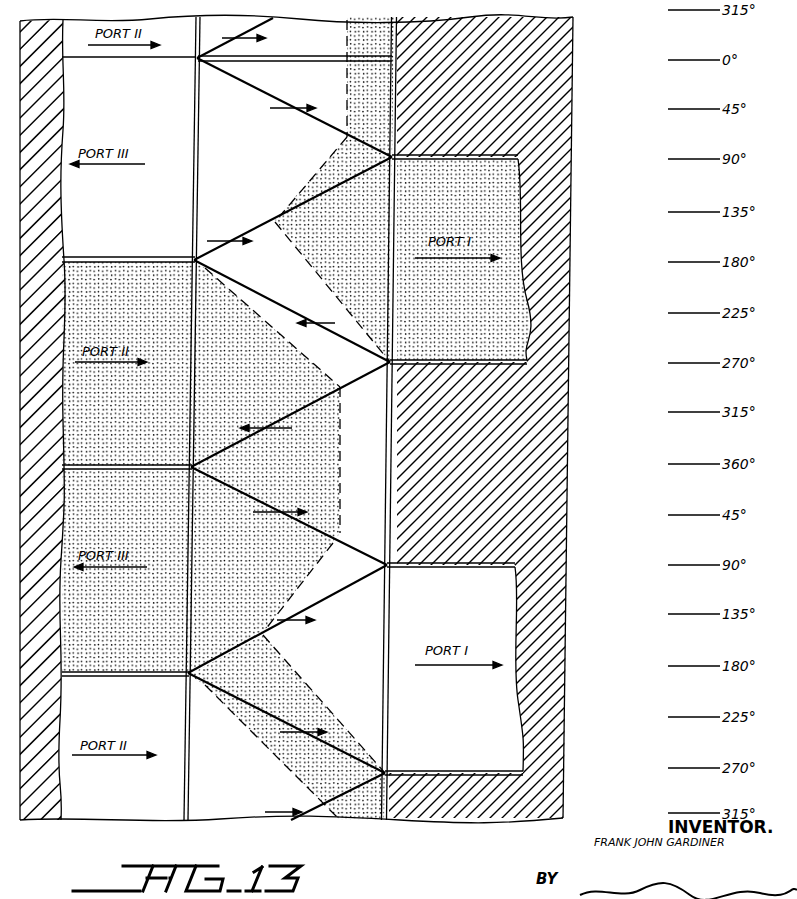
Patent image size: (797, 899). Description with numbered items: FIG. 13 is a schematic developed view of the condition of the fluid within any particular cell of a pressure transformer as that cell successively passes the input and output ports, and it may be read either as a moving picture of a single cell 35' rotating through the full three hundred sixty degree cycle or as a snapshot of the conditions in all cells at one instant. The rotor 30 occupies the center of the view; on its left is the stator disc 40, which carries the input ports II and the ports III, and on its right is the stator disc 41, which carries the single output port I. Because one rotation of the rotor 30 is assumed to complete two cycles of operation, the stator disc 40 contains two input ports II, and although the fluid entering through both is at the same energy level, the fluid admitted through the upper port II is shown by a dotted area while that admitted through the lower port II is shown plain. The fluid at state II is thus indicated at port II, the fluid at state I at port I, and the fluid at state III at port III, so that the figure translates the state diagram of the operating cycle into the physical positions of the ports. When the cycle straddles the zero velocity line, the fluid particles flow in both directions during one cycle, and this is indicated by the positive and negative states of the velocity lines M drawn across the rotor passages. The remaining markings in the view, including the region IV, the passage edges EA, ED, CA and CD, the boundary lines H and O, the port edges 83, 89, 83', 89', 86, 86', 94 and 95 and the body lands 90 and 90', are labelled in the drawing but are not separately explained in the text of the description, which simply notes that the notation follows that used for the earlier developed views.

The stator disc 40 is at (42, 24).
The rotor 30 is at (221, 38).
The cell 35' is at (362, 78).
The stator disc 41 is at (566, 72).
The valve body land 90 is at (398, 415).
The valve body land 90' is at (398, 415).
The port I opening 83 is at (461, 257).
The port I lower edge 89 is at (458, 352).
The port I opening 83' is at (455, 667).
The port I lower edge 89' is at (454, 761).
The port II upper edge 86 is at (128, 272).
The port II upper edge 86' is at (125, 686).
The port II lower edge 94 is at (166, 449).
The port III upper edge 95 is at (140, 471).
The rotor passage edge EA is at (238, 84).
The rotor passage edge ED is at (244, 200).
The rotor passage edge CA is at (266, 286).
The rotor passage edge CD is at (312, 22).
The velocity lines M is at (318, 170).
The flow boundary H is at (252, 318).
The flow boundary O is at (345, 30).
The port I / state I is at (316, 481).
The port II / state II is at (245, 573).
The port III / state III is at (276, 318).
The flow region IV is at (305, 86).